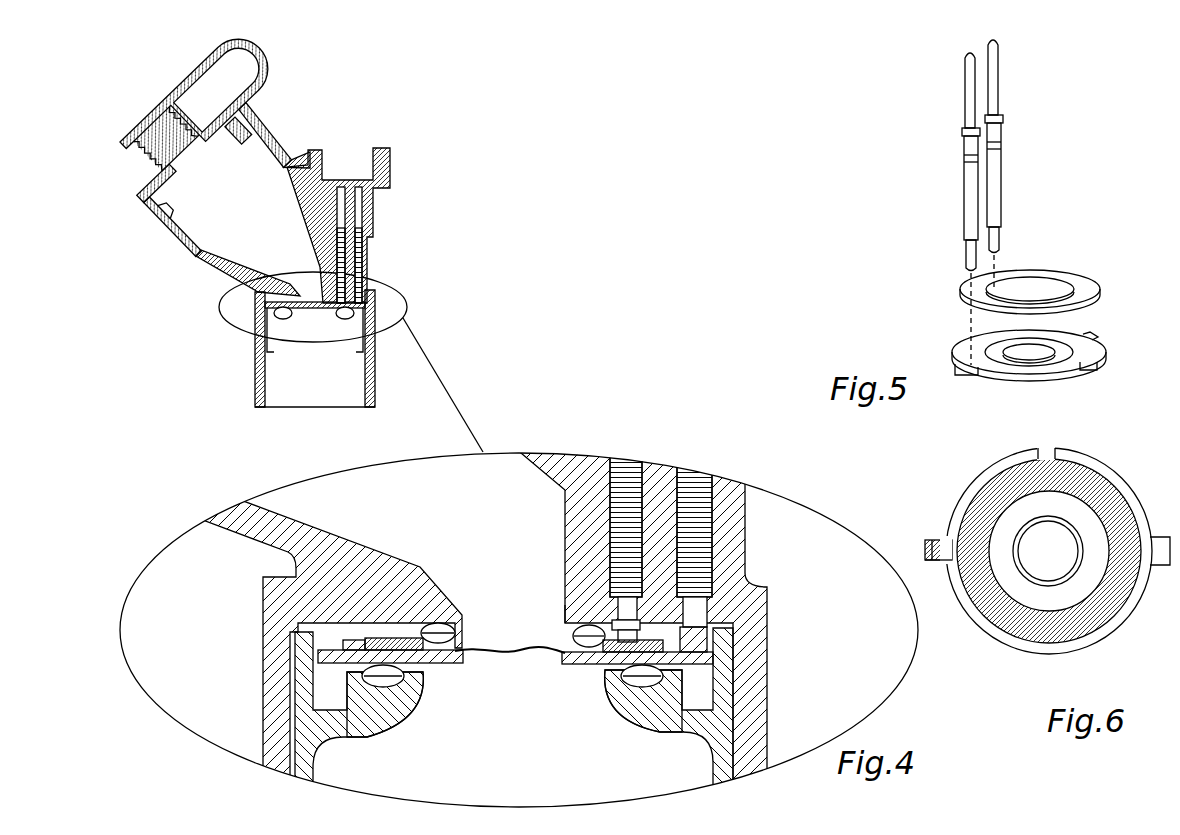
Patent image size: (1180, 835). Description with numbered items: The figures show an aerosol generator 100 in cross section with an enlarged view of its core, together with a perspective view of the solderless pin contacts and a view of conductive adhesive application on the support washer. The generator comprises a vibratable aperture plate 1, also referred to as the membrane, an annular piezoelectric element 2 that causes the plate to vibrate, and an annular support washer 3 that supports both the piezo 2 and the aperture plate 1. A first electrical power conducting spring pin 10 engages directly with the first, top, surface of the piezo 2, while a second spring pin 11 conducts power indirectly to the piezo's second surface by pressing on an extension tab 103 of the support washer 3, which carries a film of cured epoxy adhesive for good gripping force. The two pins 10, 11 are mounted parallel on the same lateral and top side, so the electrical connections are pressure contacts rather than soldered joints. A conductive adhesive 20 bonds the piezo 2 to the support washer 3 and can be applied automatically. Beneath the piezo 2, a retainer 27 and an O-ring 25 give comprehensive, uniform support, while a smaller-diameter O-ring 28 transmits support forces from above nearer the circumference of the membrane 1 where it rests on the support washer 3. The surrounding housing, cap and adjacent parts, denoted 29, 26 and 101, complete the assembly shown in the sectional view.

In FIG. 4, the vibratable aperture plate 1 is at (508, 652).
In FIG. 4, the annular piezoelectric element 2 is at (380, 640).
In FIG. 5, the annular piezoelectric element 2 is at (1075, 282).
In FIG. 4, the support washer 3 is at (583, 664).
In FIG. 5, the support washer 3 is at (1105, 346).
In FIG. 6, the support washer 3 is at (978, 474).
In FIG. 4, the first electrical power conducting pin 10 is at (340, 190).
In FIG. 5, the first electrical power conducting pin 10 is at (1003, 105).
In FIG. 4, the second electrical power conducting pin 11 is at (362, 202).
In FIG. 5, the second electrical power conducting pin 11 is at (958, 110).
In FIG. 4, the conductive adhesive 20 is at (343, 638).
In FIG. 5, the conductive adhesive 20 is at (985, 336).
In FIG. 6, the conductive adhesive 20 is at (1080, 470).
In FIG. 4, the O-ring 25 is at (392, 683).
In FIG. 4, the insert sleeve 26 is at (350, 688).
In FIG. 4, the retainer 27 is at (343, 733).
In FIG. 4, the smaller-diameter O-ring 28 is at (565, 625).
In FIG. 4, the cap body 29 is at (367, 262).
In FIG. 4, the aerosol generator 100 is at (455, 170).
In FIG. 4, the flip cap 101 is at (178, 250).
In FIG. 5, the extension tab 103 is at (960, 368).
In FIG. 6, the extension tab 103 is at (938, 563).